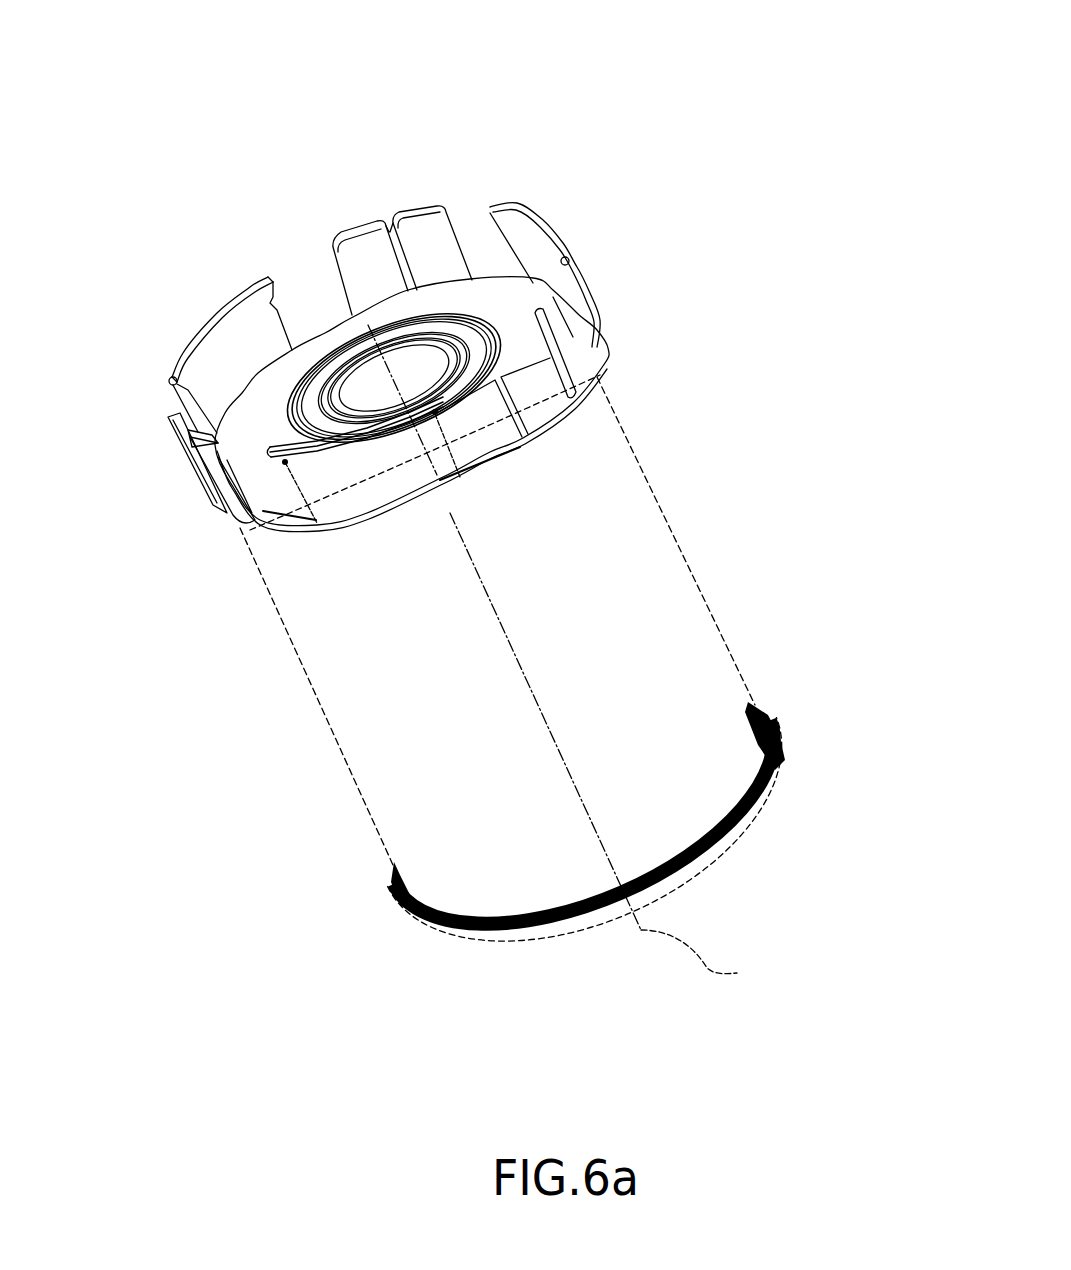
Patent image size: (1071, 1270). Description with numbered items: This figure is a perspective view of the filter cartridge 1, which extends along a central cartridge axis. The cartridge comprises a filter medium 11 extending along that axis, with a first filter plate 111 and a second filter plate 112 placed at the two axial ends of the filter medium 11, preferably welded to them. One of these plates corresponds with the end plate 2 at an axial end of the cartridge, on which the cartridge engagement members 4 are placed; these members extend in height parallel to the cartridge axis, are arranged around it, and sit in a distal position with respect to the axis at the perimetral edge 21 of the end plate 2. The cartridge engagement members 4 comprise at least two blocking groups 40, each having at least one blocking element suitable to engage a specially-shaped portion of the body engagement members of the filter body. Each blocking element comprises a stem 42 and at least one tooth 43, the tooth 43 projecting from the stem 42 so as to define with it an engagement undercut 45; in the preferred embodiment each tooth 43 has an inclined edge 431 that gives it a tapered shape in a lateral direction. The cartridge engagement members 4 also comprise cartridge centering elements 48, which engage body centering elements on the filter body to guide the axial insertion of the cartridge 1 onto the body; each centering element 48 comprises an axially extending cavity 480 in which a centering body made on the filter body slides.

The filter cartridge 1 is at (853, 517).
The end plate 2 is at (603, 337).
The second filter plate 112 is at (676, 541).
The cartridge engagement members 4 is at (620, 243).
The filter medium 11 is at (390, 752).
The first filter plate 111 is at (783, 733).
The perimetral edge 21 is at (510, 450).
The blocking group 40 is at (543, 173).
The stem 42 is at (233, 340).
The tooth 43 is at (267, 273).
The engagement undercut 45 is at (273, 302).
The cartridge centering elements 48 is at (430, 197).
The cavity 480 is at (387, 230).
The inclined edge 431 is at (435, 414).